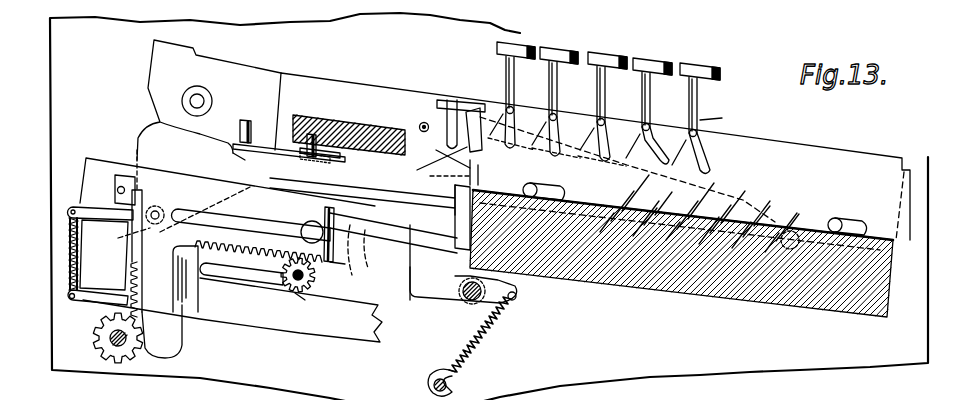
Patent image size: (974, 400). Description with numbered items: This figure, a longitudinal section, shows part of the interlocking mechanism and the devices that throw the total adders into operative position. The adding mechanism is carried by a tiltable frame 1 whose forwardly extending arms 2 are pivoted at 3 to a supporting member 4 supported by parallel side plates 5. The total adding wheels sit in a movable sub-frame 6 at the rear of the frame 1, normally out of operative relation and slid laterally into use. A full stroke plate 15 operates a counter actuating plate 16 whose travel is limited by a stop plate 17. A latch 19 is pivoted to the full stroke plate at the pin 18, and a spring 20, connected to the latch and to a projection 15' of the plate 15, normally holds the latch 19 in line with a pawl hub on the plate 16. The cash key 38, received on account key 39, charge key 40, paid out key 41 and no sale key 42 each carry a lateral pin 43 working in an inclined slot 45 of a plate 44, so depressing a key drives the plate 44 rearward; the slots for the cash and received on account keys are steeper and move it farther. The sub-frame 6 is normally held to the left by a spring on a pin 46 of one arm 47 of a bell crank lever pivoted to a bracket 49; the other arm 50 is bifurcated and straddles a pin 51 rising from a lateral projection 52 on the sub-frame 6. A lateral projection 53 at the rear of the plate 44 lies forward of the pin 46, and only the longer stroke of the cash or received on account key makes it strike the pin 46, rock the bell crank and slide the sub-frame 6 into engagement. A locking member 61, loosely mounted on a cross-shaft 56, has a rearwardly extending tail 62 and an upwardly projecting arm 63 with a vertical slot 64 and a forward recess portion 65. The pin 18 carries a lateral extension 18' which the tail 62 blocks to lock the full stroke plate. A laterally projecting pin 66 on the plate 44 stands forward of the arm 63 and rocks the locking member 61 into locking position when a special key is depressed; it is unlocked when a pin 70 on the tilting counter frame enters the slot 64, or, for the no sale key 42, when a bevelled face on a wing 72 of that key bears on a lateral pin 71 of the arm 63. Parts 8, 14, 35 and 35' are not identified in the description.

The tiltable frame 1 is at (307, 86).
The forwardly extending arms 2 is at (627, 169).
The pivot 3 is at (790, 228).
The supporting member 4 is at (800, 298).
The side plates 5 is at (518, 36).
The movable sub-frame 6 is at (240, 80).
The pinion shaft 8 is at (316, 298).
The rack bar 14 is at (232, 278).
The full stroke plate 15 is at (175, 254).
The projection 15' is at (222, 320).
The counter actuating plate 16 is at (100, 160).
The stop plate 17 is at (380, 240).
The pivot pin 18 is at (291, 287).
The lateral extension 18' is at (199, 216).
The latch 19 is at (113, 188).
The spring 20 is at (80, 262).
The pivot pin 35 is at (335, 234).
The pivot plate 35' is at (341, 267).
The cash key 38 is at (699, 105).
The received on account key 39 is at (652, 104).
The charge key 40 is at (607, 100).
The paid out key 41 is at (559, 96).
The no sale key 42 is at (516, 90).
The lateral pin 43 is at (722, 118).
The plate 44 is at (783, 146).
The inclined slots 45 is at (512, 128).
The pin 46 is at (322, 138).
The arm 47 is at (325, 158).
The bracket 49 is at (305, 163).
The arm 50 is at (289, 162).
The pin 51 is at (247, 118).
The lateral projection 52 is at (232, 150).
The lateral projection 53 is at (352, 138).
The cross-shaft 56 is at (466, 300).
The locking member 61 is at (415, 300).
The tail 62 is at (366, 253).
The arm 63 is at (420, 193).
The vertical slot 64 is at (448, 98).
The recess portion 65 is at (451, 217).
The laterally projecting pin 66 is at (478, 177).
The laterally projecting pin 70 is at (424, 122).
The lateral pin 71 is at (432, 165).
The wing 72 is at (472, 108).